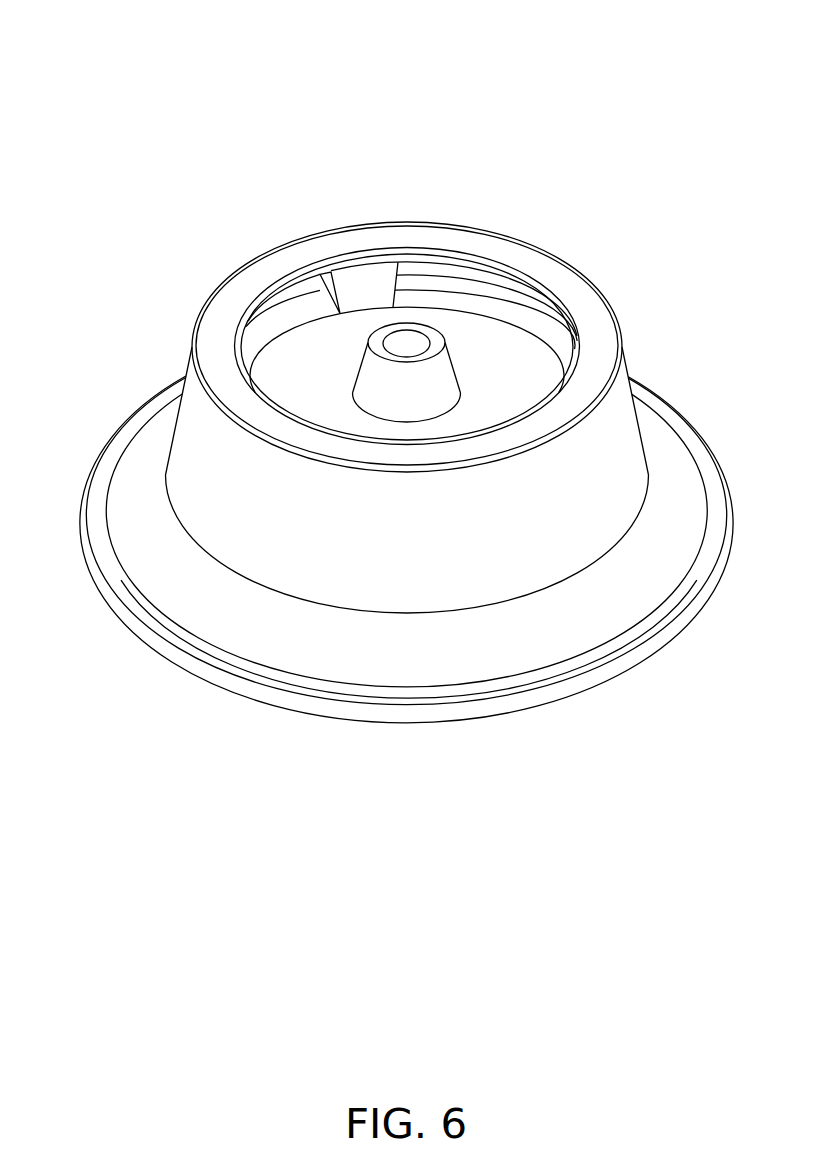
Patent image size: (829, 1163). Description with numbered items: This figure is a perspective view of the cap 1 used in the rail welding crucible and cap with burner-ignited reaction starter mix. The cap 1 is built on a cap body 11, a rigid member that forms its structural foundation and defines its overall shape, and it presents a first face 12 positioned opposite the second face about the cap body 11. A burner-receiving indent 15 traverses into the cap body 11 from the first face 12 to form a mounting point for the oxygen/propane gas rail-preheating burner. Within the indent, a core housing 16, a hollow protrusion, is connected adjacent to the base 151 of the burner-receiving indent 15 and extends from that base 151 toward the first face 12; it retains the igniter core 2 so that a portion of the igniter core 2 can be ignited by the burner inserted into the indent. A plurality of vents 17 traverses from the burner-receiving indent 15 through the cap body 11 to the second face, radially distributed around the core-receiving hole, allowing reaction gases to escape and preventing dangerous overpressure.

The cap 1 is at (406, 365).
The igniter core 2 is at (396, 343).
The cap body 11 is at (631, 380).
The first face 12 is at (222, 302).
The burner-receiving indent 15 is at (392, 264).
The base of the burner-receiving indent 151 is at (322, 386).
The core housing 16 is at (407, 215).
The plurality of vents 17 is at (260, 335).